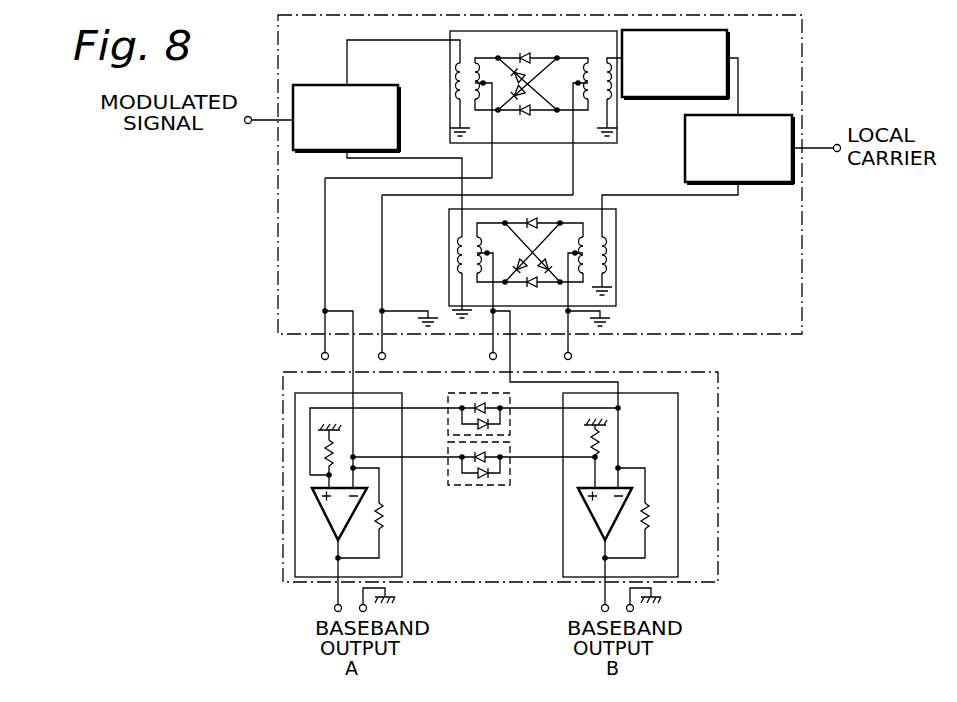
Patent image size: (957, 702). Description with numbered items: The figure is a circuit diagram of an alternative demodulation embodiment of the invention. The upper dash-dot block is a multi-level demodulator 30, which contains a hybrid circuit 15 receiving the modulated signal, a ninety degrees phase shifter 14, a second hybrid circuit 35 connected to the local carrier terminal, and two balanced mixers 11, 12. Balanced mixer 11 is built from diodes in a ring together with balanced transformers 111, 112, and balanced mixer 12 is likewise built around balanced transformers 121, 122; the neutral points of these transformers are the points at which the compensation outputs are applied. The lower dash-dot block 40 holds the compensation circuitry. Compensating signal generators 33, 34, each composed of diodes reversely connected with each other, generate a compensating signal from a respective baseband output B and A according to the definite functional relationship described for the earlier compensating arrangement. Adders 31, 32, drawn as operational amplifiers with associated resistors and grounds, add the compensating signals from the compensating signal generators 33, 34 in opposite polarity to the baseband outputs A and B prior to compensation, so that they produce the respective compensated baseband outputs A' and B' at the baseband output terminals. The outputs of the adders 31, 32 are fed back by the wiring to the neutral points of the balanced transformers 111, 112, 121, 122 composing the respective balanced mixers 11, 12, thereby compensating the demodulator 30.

The balanced mixer 11 is at (556, 113).
The balanced mixer 12 is at (558, 263).
The 90 degrees phase shifter 14 is at (728, 41).
The hybrid circuit 15 is at (377, 85).
The multi-level demodulator 30 is at (803, 50).
The adder 31 is at (295, 428).
The adder 32 is at (678, 432).
The compensating signal generator 33 is at (511, 418).
The compensating signal generator 34 is at (511, 470).
The hybrid circuit 35 is at (768, 113).
The baseband output section 40 is at (719, 392).
The balanced transformer 111 is at (632, 120).
The balanced transformer 112 is at (474, 118).
The balanced transformer 121 is at (586, 267).
The balanced transformer 122 is at (478, 270).